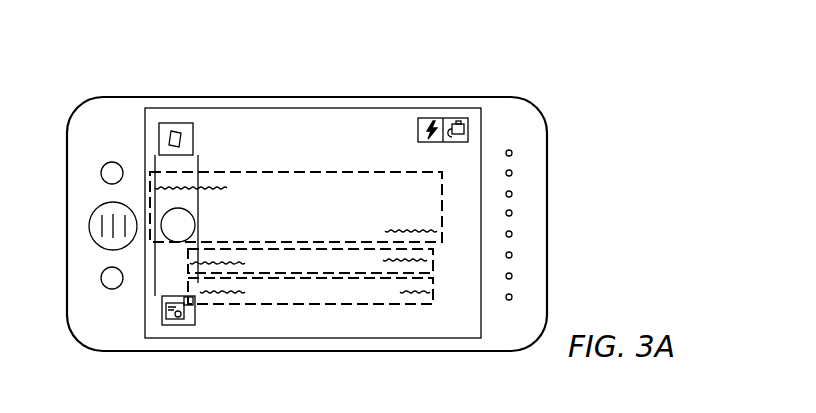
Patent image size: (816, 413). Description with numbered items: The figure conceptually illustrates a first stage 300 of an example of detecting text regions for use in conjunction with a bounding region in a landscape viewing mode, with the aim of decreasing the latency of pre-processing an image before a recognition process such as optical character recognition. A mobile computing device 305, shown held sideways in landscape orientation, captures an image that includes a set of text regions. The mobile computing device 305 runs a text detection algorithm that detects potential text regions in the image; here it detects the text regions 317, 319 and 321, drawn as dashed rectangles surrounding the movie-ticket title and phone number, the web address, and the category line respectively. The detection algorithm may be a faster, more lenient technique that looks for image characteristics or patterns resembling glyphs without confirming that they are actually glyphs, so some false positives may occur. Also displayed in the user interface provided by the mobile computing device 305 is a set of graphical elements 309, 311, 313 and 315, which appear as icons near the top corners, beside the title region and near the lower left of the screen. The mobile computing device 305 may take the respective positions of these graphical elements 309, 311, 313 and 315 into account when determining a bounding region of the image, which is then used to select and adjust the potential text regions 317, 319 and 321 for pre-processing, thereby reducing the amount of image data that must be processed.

The first stage 300 is at (577, 128).
The mobile computing device 305 is at (133, 88).
The graphical element 309 is at (432, 118).
The graphical element 311 is at (176, 123).
The graphical element 313 is at (168, 223).
The graphical element 315 is at (177, 325).
The text region 317 is at (442, 210).
The text region 319 is at (433, 262).
The text region 321 is at (412, 304).